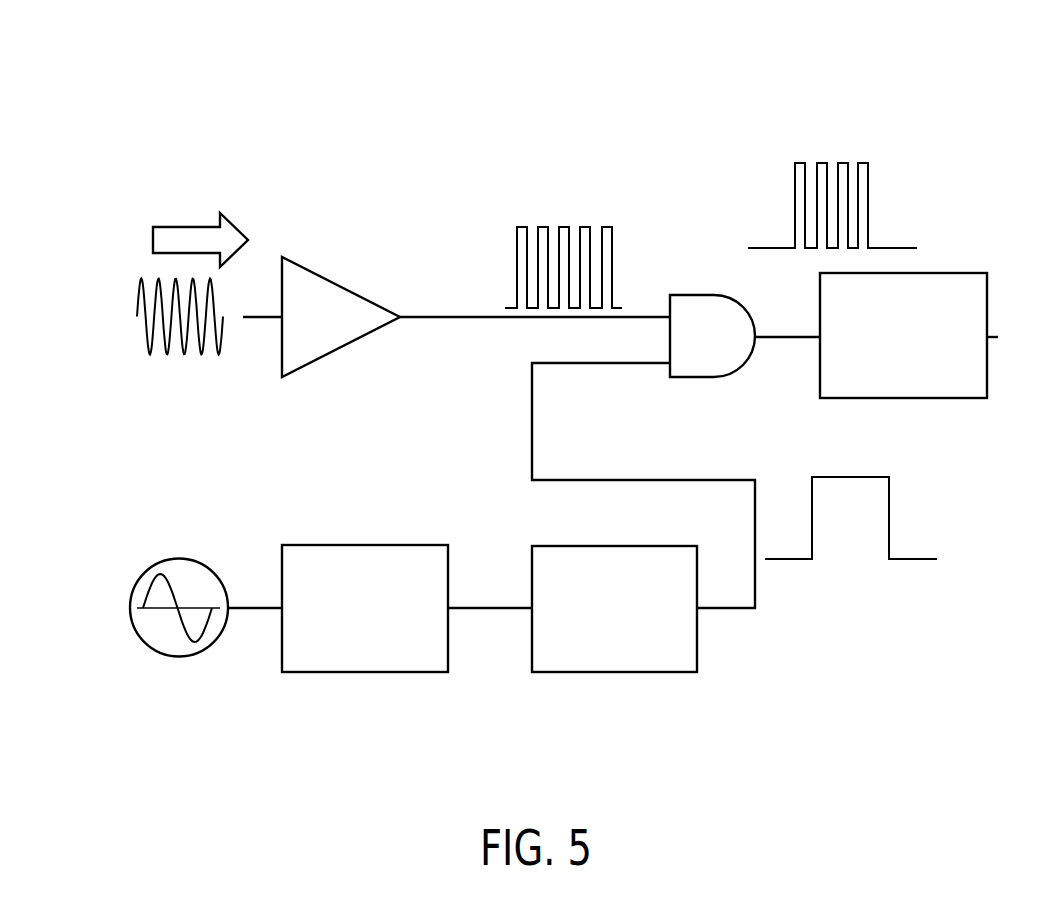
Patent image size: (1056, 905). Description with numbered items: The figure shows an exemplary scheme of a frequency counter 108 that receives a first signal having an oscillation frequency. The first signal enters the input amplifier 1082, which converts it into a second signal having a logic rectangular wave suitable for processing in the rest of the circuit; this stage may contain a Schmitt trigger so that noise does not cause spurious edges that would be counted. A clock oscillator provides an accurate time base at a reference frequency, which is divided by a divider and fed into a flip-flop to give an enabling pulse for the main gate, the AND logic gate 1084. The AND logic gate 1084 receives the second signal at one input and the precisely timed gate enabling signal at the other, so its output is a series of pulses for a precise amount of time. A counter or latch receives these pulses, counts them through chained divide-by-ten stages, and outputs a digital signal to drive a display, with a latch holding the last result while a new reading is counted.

The frequency counter 108 is at (115, 96).
The input amplifier 1082 is at (343, 285).
The AND logic gate 1084 is at (700, 293).